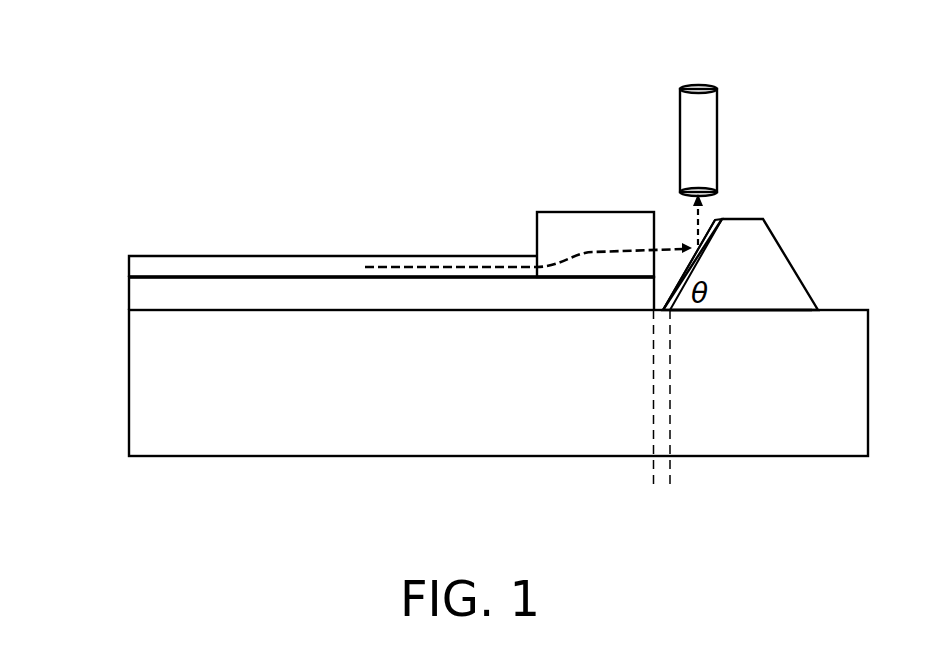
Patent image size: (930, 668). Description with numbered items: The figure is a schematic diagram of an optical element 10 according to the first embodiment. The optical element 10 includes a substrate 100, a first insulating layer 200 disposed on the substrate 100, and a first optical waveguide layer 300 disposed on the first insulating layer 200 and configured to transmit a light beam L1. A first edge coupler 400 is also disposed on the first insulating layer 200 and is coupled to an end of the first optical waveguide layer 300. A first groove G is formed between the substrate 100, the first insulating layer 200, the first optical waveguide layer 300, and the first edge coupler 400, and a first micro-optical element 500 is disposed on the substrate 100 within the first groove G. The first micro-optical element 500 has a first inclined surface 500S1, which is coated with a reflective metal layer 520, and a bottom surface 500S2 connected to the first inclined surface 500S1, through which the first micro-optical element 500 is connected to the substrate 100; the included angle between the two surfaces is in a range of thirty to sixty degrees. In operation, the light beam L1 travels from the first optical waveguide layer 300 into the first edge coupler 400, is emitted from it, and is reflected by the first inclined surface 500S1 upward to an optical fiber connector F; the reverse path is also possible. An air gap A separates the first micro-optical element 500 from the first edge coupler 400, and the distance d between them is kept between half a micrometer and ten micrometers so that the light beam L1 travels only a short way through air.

The optical element 10 is at (911, 569).
The substrate 100 is at (142, 372).
The first insulating layer 200 is at (142, 296).
The first optical waveguide layer 300 is at (142, 265).
The first edge coupler 400 is at (583, 227).
The first micro-optical element 500 is at (770, 248).
The reflective metal layer 520 is at (700, 258).
The first inclined surface 500S1 is at (724, 232).
The bottom surface 500S2 is at (748, 305).
The light beam L1 is at (438, 267).
The optical fiber connector F is at (697, 97).
The first groove G is at (663, 270).
The air gap A is at (663, 228).
The distance d is at (712, 480).